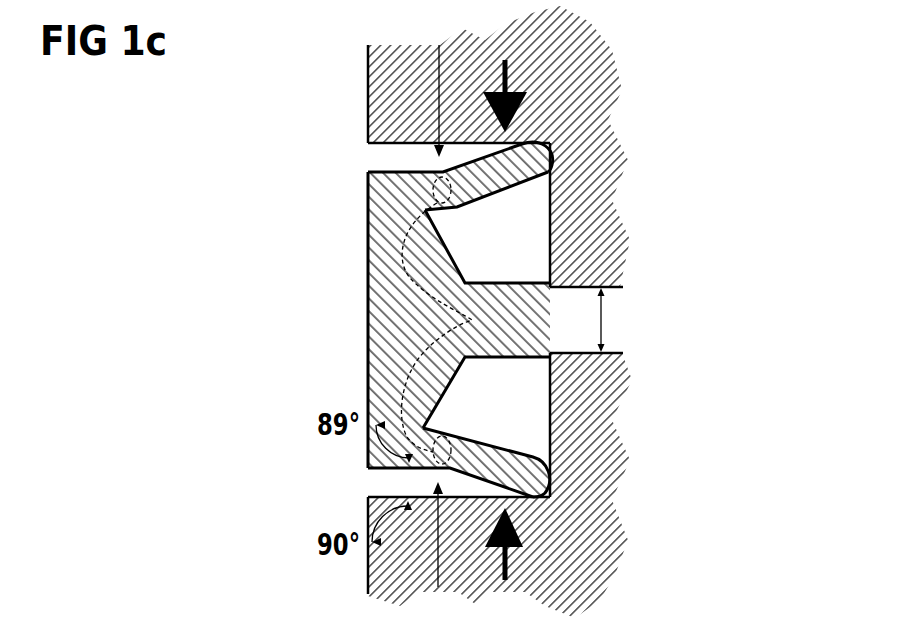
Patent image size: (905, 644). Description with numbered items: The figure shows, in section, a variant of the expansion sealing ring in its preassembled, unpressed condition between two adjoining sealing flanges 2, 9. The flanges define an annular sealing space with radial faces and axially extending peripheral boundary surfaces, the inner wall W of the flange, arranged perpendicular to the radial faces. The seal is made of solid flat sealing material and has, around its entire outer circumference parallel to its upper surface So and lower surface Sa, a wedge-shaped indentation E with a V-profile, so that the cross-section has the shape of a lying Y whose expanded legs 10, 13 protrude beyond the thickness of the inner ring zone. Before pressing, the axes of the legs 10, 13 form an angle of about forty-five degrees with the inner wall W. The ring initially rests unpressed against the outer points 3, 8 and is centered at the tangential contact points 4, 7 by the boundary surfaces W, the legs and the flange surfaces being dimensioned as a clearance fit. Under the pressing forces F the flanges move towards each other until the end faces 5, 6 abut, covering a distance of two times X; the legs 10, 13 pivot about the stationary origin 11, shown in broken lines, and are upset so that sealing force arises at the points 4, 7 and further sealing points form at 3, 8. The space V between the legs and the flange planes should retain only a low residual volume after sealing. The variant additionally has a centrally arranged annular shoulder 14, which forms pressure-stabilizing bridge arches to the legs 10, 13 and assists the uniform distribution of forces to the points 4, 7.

The sealing flange 2 is at (532, 90).
The outer contact point 3 is at (550, 143).
The tangential contact point 4 is at (551, 166).
The end face 5 is at (623, 287).
The end face 6 is at (623, 353).
The tangential contact point 7 is at (550, 473).
The outer contact point 8 is at (550, 498).
The sealing flange 9 is at (537, 550).
The leg 10 is at (463, 173).
The stationary origin 11 is at (440, 192).
The leg 13 is at (463, 461).
The annular shoulder 14 is at (487, 318).
The upper surface So is at (445, 173).
The lower surface Sa is at (460, 463).
The wedge-shaped indentation E is at (458, 240).
The inner wall W is at (550, 228).
The half travel distance X is at (587, 320).
The residual space V is at (440, 316).
The pressing force F is at (505, 316).